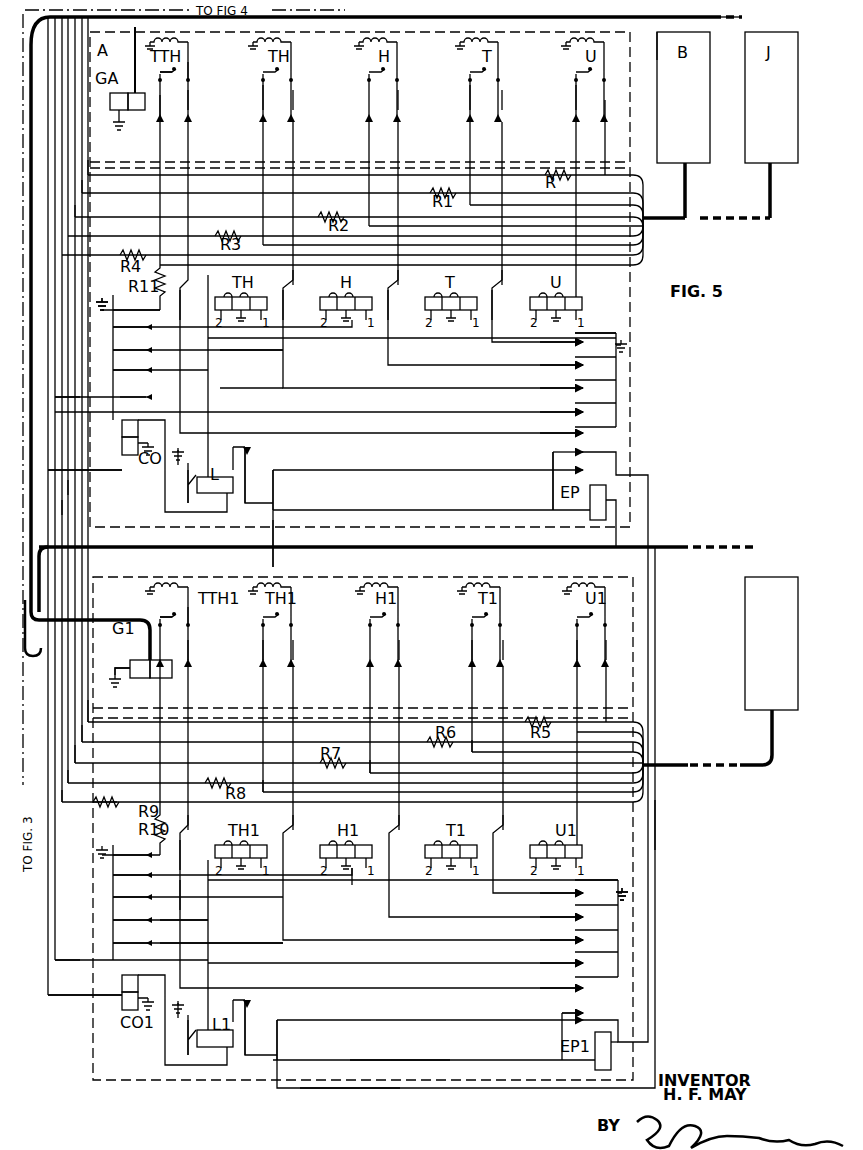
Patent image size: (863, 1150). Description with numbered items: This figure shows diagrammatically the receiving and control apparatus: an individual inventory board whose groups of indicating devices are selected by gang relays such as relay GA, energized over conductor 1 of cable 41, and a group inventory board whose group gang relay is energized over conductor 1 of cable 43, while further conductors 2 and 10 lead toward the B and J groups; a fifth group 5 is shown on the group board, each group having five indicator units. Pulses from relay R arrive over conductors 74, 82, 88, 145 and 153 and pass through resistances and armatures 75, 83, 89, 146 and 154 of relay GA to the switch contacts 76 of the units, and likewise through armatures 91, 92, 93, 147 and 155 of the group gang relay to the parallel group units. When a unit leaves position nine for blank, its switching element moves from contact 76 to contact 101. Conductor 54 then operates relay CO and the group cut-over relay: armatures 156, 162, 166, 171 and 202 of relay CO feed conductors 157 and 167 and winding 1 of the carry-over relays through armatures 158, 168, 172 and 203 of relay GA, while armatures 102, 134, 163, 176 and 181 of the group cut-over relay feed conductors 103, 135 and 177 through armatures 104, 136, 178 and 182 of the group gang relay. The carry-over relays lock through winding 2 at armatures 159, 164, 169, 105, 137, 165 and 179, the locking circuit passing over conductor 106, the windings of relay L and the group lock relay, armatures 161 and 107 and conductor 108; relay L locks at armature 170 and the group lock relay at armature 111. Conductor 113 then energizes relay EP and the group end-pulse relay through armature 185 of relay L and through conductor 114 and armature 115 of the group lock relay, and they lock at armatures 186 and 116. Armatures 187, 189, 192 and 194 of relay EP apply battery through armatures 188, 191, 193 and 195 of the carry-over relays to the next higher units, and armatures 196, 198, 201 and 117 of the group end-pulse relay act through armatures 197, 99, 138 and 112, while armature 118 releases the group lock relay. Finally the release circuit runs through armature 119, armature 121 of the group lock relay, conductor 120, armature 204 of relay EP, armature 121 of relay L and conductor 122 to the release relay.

The conductor 1 is at (124, 311).
The winding 2 is at (662, 22).
The indicator group 5 is at (757, 547).
The conductor 10 is at (742, 17).
The cable 41 is at (41, 638).
The cable 43 is at (37, 657).
The conductor 54 is at (90, 472).
The conductor 74 is at (90, 150).
The armature of relay GA 75 is at (605, 111).
The switch contact 76 is at (613, 604).
The conductor 82 is at (88, 187).
The armature of relay GA 83 is at (502, 101).
The conductor 88 is at (82, 227).
The armature of relay GA 89 is at (398, 101).
The armature of relay G1 91 is at (606, 649).
The armature of relay G1 92 is at (503, 649).
The armature of relay G1 93 is at (399, 649).
The armature of relay H1 99 is at (272, 801).
The switch contact 101 is at (364, 346).
The armature of relay CO1 102 is at (131, 897).
The conductor 103 is at (248, 909).
The armature of relay G1 104 is at (472, 650).
The armature of relay T1 105 is at (399, 828).
The conductor 106 is at (352, 883).
The armature of relay CO1 107 is at (131, 942).
The conductor 108 is at (55, 948).
The armature of relay L1 111 is at (178, 1037).
The armature of relay T1 112 is at (386, 791).
The conductor 113 is at (350, 546).
The conductor 114 is at (396, 1060).
The armature of relay L1 115 is at (263, 1027).
The armature of relay EP1 116 is at (579, 986).
The armature of relay EP1 117 is at (579, 893).
The armature of relay EP1 118 is at (579, 666).
The armature of relay EP1 119 is at (590, 1011).
The conductor 120 is at (355, 1090).
The armature of relays L and L1 121 is at (273, 488).
The conductor 122 is at (273, 562).
The armature of relay CO1 134 is at (131, 919).
The conductor 135 is at (248, 932).
The armature of relay G1 136 is at (577, 650).
The armature of relay U1 137 is at (503, 828).
The armature of relay U1 138 is at (489, 781).
The conductor 145 is at (68, 492).
The armature of relay GA 146 is at (293, 101).
The armature of relay G1 147 is at (293, 649).
The conductor 153 is at (62, 512).
The armature of relay GA 154 is at (188, 100).
The armature of relay G1 155 is at (188, 648).
The armature of relay CO 156 is at (131, 349).
The conductor 157 is at (247, 354).
The armature of relay GA 158 is at (473, 104).
The armature of relay T 159 is at (400, 305).
The armature of relay CO 161 is at (134, 398).
The armature of relay CO 162 is at (131, 326).
The armature of relay CO1 163 is at (131, 875).
The armature of relay H 164 is at (295, 305).
The armature of relay H1 165 is at (293, 828).
The armature of relay CO 166 is at (131, 369).
The conductor 167 is at (237, 378).
The armature of relay GA 168 is at (578, 104).
The armature of relay U 169 is at (506, 305).
The armature of relay L 170 is at (176, 486).
The armature of relay CO 171 is at (136, 304).
The armature of relay GA 172 is at (265, 104).
The armature of relay CO1 176 is at (131, 855).
The conductor 177 is at (193, 895).
The armature of relay G1 178 is at (266, 658).
The armature of relay TH1 179 is at (188, 828).
The armature of relay CO1 181 is at (117, 812).
The armature of relay G1 182 is at (152, 668).
The armature of relay L 185 is at (248, 458).
The armature of relay EP 186 is at (579, 436).
The armature of relay EP 187 is at (579, 414).
The armature of relay TH 188 is at (194, 305).
The armature of relay EP 189 is at (579, 369).
The armature of relay H 191 is at (293, 283).
The armature of relay EP 192 is at (579, 347).
The armature of relay T 193 is at (398, 283).
The armature of relay EP 194 is at (603, 334).
The armature of relay U 195 is at (512, 278).
The armature of relay EP1 196 is at (579, 962).
The armature of relay TH1 197 is at (193, 855).
The armature of relay EP1 198 is at (579, 916).
The armature of relay EP1 201 is at (609, 879).
The armature of relay CO 202 is at (112, 293).
The armature of relay GA 203 is at (160, 108).
The armature of relay EP 204 is at (586, 481).